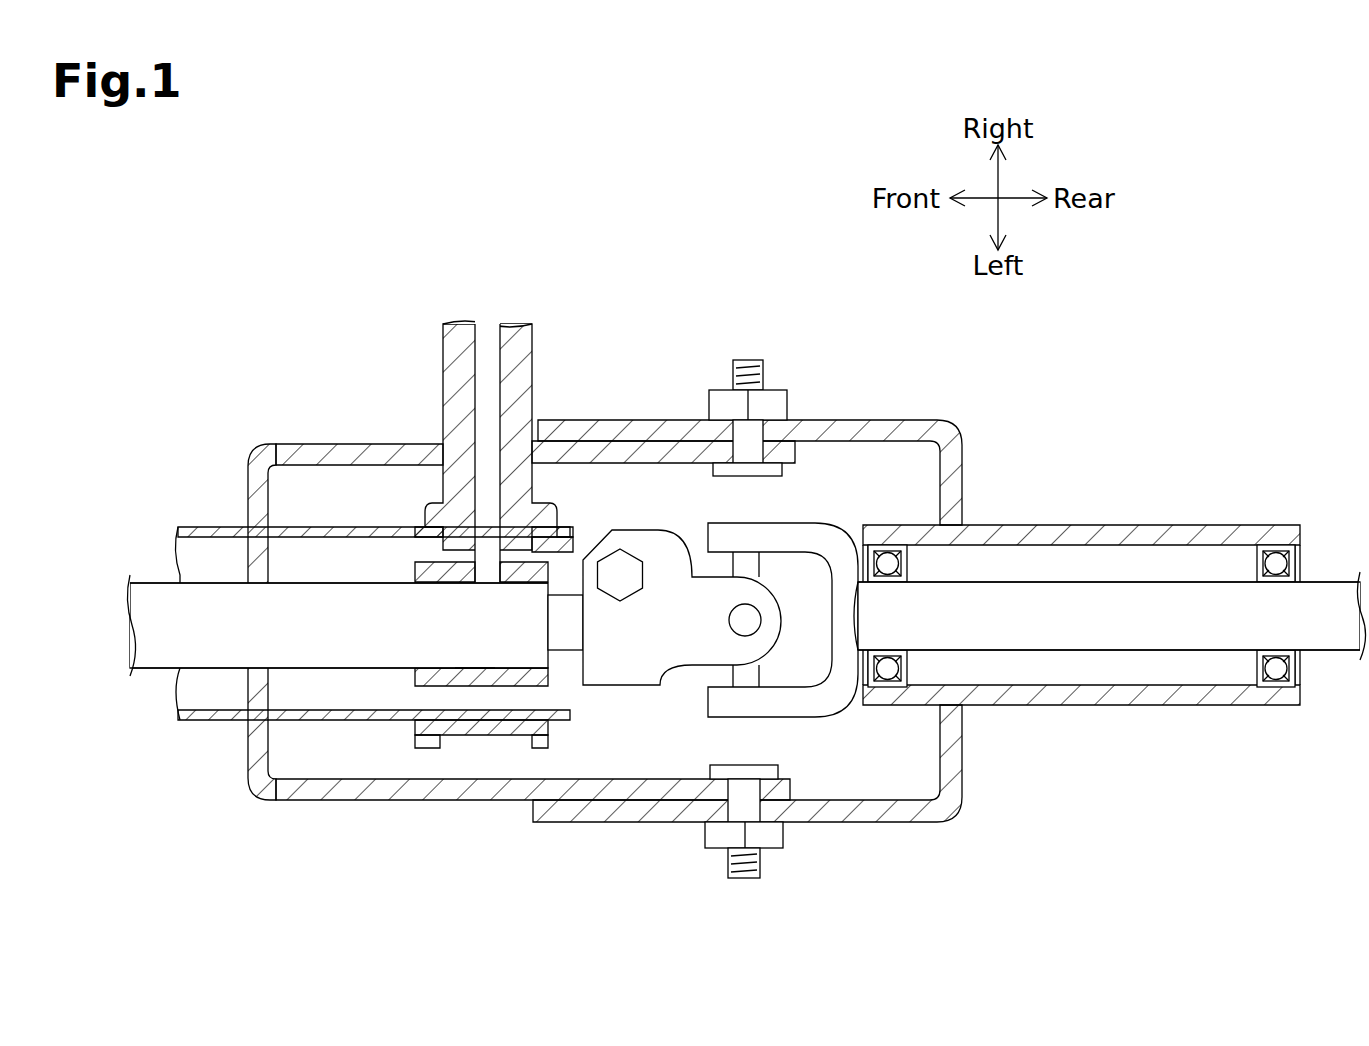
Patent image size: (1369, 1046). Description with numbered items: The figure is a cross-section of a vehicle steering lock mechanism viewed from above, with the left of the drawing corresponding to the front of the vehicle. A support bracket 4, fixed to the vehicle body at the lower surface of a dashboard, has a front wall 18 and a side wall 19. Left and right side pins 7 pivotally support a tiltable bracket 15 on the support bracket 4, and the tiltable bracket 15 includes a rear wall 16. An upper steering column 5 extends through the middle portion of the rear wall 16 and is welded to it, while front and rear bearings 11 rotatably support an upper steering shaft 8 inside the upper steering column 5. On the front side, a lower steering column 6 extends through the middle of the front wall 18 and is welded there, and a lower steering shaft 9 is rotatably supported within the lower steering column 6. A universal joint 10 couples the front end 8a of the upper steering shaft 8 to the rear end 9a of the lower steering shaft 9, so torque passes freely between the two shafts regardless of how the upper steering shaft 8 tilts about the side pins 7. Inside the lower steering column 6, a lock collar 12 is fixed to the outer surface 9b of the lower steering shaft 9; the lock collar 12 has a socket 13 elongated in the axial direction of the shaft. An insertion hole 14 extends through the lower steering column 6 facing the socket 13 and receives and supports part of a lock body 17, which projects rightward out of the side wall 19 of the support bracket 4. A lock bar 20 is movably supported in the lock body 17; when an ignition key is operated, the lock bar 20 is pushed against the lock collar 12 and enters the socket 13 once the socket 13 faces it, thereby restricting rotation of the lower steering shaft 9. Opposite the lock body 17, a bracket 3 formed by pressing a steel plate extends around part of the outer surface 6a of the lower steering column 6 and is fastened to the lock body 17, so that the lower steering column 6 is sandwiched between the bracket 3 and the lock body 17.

The bracket 3 is at (432, 744).
The support bracket 4 is at (506, 584).
The upper steering column 5 is at (1085, 530).
The lower steering column 6 is at (372, 622).
The outer surface of the lower steering column 6a is at (370, 730).
The side pins 7 is at (745, 432).
The upper steering shaft 8 is at (1110, 626).
The front end of the upper steering shaft 8a is at (868, 617).
The lower steering shaft 9 is at (355, 675).
The rear end of the lower steering shaft 9a is at (556, 620).
The outer surface of the lower steering shaft 9b is at (473, 682).
The universal joint 10 is at (812, 528).
The bearings 11 is at (1268, 560).
The lock collar 12 is at (412, 674).
The socket 13 is at (560, 548).
The insertion hole 14 is at (432, 521).
The tiltable bracket 15 is at (880, 818).
The rear wall 16 is at (776, 647).
The lock body 17 is at (469, 427).
The front wall 18 is at (265, 462).
The side wall 19 is at (632, 452).
The lock bar 20 is at (486, 340).